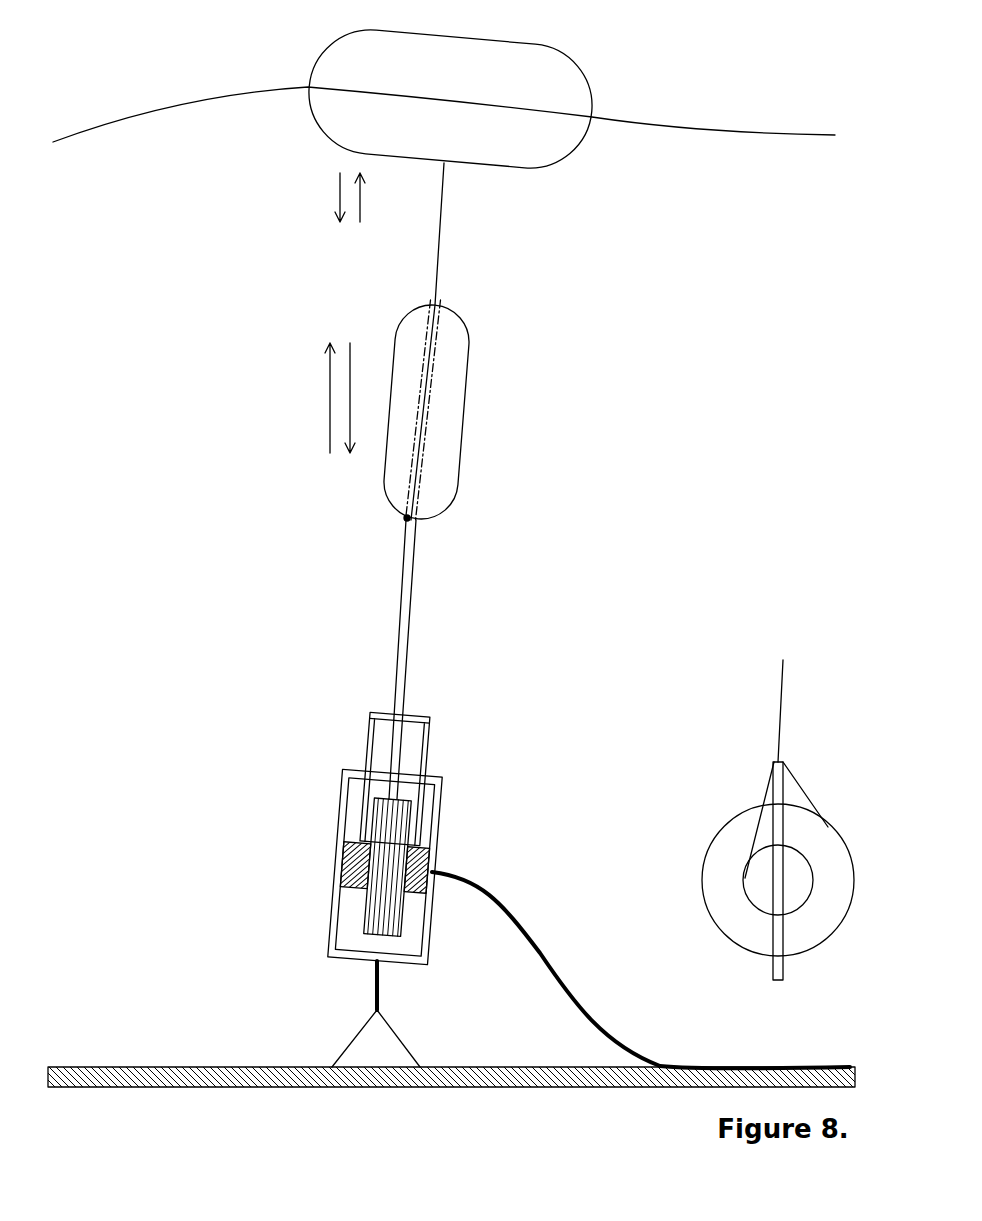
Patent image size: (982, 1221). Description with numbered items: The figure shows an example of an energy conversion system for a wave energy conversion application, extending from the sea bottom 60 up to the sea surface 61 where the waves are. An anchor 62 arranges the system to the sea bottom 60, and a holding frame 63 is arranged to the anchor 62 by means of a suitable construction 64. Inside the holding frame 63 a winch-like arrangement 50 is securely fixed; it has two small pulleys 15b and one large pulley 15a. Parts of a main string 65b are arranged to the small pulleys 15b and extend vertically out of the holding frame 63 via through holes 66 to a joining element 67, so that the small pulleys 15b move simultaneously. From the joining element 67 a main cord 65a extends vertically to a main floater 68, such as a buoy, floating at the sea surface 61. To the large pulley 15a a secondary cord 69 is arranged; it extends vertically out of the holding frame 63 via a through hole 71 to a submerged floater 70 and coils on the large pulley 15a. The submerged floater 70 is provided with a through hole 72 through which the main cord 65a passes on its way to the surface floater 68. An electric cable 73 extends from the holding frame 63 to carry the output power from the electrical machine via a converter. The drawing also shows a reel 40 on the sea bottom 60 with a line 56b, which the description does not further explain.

The sea surface 61 is at (200, 97).
The main floater 68 is at (560, 45).
The main cord 65a is at (439, 248).
The submerged floater 70 is at (467, 358).
The through hole 72 is at (445, 413).
The secondary cord 69 is at (403, 572).
The through hole 71 is at (386, 750).
The joining element 67 is at (417, 713).
The main string 65b is at (368, 727).
The through holes 66 is at (347, 759).
The winch-like arrangement 50 is at (343, 828).
The small pulleys 15b is at (357, 868).
The holding frame 63 is at (333, 918).
The large pulley 15a is at (373, 915).
The construction 64 is at (374, 987).
The anchor 62 is at (370, 1046).
The sea bottom 60 is at (157, 1067).
The electric cable 73 is at (612, 1043).
The reel 40 is at (685, 855).
The line 56b is at (763, 800).